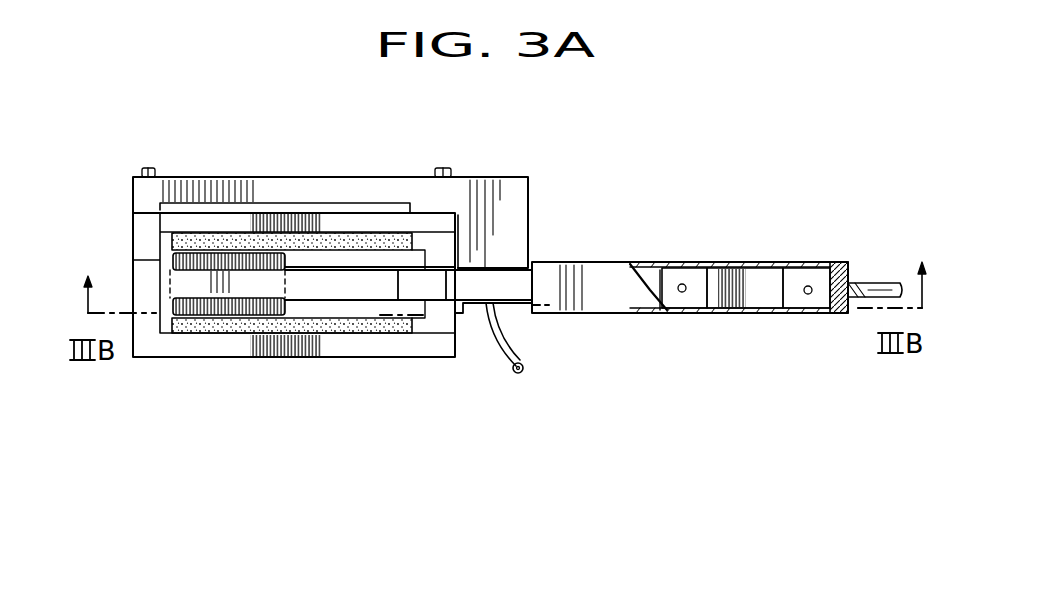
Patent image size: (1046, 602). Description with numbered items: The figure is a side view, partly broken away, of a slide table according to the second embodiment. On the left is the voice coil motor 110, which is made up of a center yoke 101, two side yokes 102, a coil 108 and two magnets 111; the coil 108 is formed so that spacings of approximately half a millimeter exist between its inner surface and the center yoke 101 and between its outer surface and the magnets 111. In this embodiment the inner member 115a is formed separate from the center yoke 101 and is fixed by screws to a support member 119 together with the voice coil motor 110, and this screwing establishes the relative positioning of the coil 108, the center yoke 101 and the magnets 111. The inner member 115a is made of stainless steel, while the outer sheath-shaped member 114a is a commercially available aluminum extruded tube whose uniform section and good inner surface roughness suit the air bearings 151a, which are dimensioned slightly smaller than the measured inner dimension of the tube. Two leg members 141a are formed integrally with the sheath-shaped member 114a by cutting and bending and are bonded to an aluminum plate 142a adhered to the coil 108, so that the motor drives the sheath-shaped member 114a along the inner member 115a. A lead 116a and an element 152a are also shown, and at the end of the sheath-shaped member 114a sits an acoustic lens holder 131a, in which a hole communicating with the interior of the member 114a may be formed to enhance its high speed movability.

The center yoke 101 is at (153, 290).
The side yokes 102 is at (207, 348).
The coil 108 is at (298, 322).
The voice coil motor 110 is at (295, 372).
The magnets 111 is at (250, 334).
The support member 119 is at (505, 185).
The aluminum plate 142a is at (370, 283).
The leg members 141a is at (468, 285).
The lead wire 116a is at (512, 372).
The sheath-shaped member 114a is at (590, 293).
The inner member 115a is at (652, 278).
The piston 152a is at (682, 293).
The air bearings 151a is at (810, 300).
The acoustic lens holder 131a is at (847, 260).